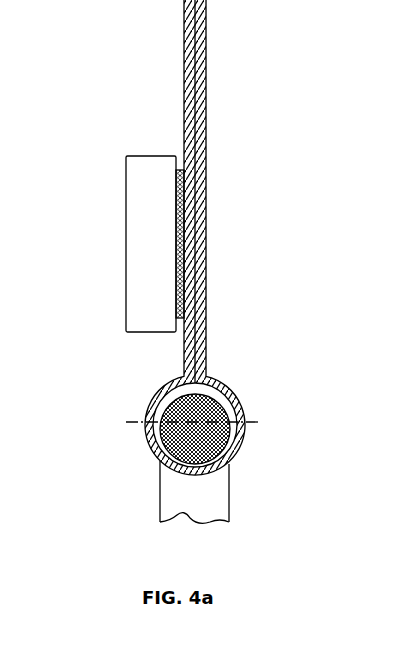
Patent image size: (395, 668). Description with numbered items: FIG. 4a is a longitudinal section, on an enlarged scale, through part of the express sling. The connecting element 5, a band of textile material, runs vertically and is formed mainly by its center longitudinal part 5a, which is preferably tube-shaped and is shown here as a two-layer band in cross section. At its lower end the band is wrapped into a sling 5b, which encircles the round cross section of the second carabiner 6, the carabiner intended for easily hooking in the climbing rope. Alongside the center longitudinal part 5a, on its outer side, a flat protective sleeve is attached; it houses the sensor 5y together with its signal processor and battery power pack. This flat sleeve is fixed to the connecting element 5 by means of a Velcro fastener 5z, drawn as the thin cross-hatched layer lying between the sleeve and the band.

The connecting element 5 is at (97, 96).
The center longitudinal part 5a is at (184, 36).
The sling 5b is at (147, 403).
The sensor 5y is at (147, 264).
The Velcro fastener 5z is at (179, 229).
The second carabiner 6 is at (170, 502).